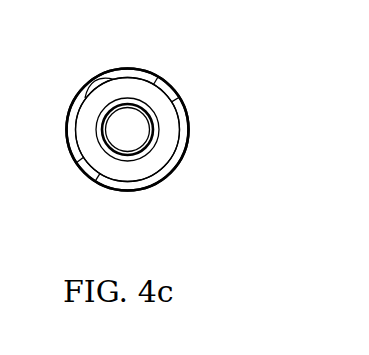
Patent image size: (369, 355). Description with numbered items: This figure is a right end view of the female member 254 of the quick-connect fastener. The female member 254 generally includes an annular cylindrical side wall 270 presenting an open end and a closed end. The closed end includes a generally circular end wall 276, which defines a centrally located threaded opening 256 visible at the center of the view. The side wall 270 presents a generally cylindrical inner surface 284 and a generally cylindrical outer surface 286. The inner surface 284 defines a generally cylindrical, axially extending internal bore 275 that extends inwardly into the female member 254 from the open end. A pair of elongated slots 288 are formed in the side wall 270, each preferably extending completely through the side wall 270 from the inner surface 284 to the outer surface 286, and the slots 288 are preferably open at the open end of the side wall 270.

The female member 254 is at (136, 70).
The threaded opening 256 is at (129, 138).
The side wall 270 is at (146, 186).
The internal bore 275 is at (122, 170).
The end wall 276 is at (165, 125).
The inner surface 284 is at (108, 76).
The outer surface 286 is at (72, 100).
The slots 288 is at (168, 83).